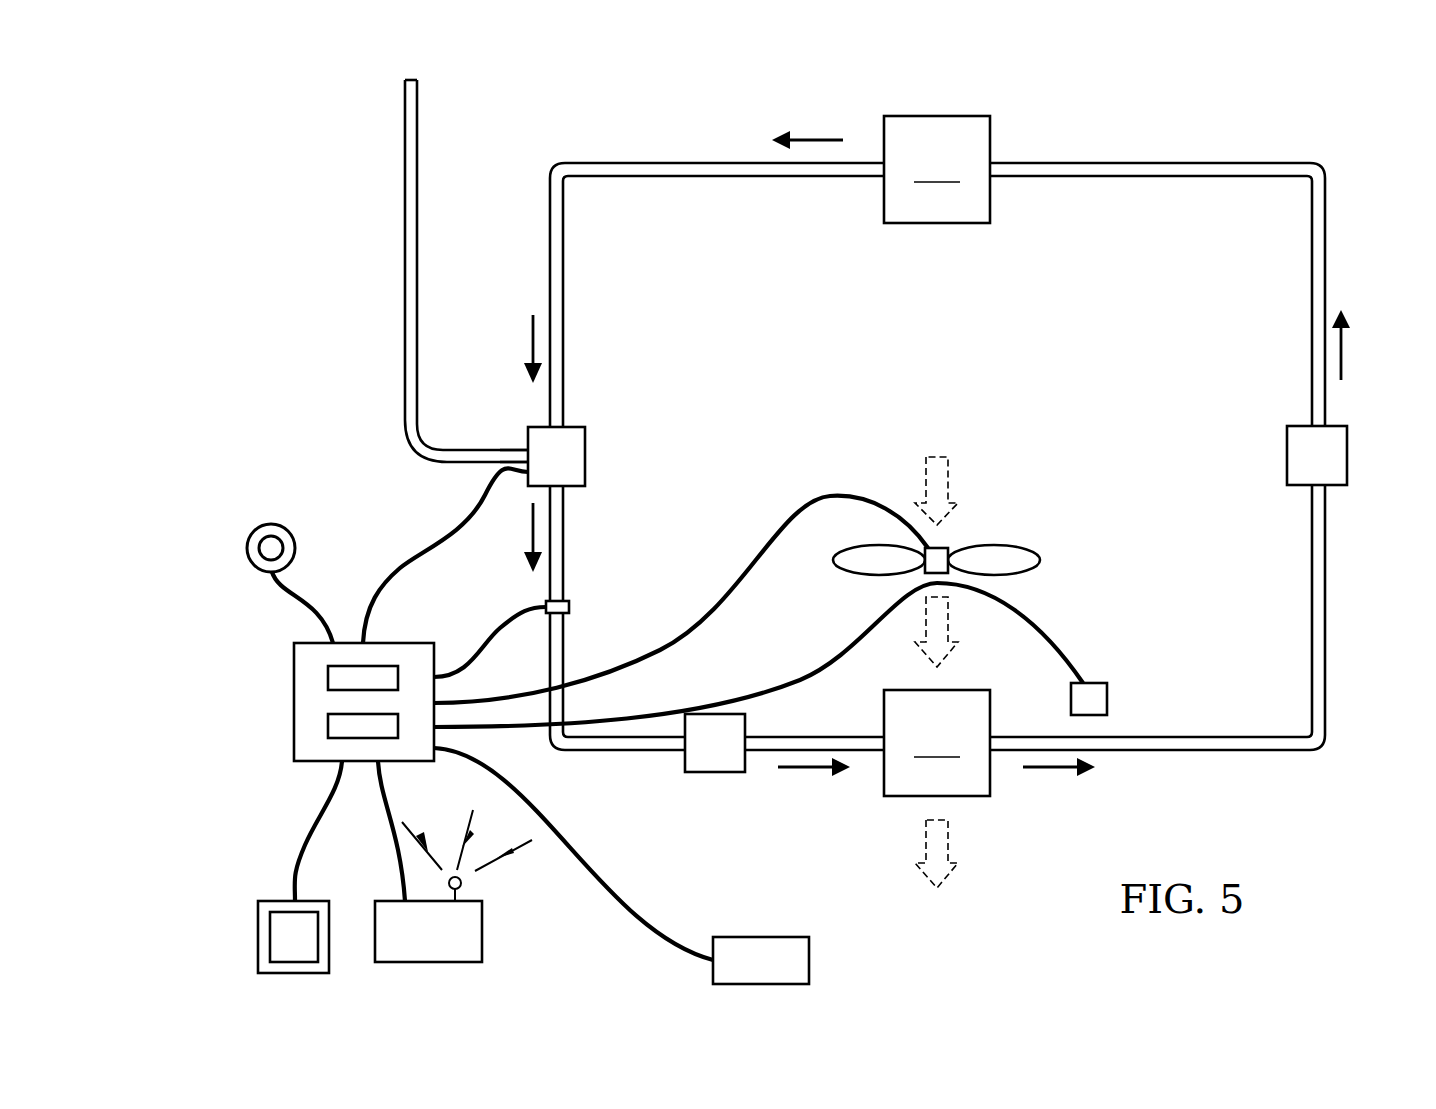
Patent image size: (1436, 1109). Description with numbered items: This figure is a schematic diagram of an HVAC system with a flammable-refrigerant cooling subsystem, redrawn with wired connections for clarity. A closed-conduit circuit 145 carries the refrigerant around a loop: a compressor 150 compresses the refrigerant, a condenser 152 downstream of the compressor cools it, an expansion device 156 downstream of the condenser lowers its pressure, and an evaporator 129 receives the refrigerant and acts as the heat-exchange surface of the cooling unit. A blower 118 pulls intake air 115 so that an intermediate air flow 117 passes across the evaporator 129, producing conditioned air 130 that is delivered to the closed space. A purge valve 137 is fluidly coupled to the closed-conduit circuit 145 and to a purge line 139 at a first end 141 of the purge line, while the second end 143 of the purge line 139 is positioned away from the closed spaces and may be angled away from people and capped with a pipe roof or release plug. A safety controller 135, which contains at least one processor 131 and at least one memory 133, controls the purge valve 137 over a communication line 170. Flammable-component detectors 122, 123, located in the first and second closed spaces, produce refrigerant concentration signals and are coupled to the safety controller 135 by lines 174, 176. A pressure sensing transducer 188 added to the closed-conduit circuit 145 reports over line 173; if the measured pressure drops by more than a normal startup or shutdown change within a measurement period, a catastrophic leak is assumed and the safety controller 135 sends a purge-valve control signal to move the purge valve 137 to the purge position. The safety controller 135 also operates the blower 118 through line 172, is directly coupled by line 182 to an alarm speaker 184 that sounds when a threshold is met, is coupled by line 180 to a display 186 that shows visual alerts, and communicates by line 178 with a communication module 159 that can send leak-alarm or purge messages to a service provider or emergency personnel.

The second end of purge line 143 is at (405, 95).
The purge line 139 is at (405, 250).
The first end of purge line 141 is at (524, 449).
The closed-conduit circuit 145 is at (614, 163).
The condenser 152 is at (937, 169).
The compressor 150 is at (1287, 456).
The expansion device 156 is at (713, 772).
The evaporator 129 is at (937, 743).
The purge valve 137 is at (585, 440).
The safety controller 135 is at (418, 635).
The processor 131 is at (328, 678).
The memory 133 is at (328, 724).
The communication line 170 is at (450, 533).
The communication line 182 is at (313, 608).
The alarm speaker 184 is at (247, 549).
The communication line 173 is at (512, 622).
The pressure sensing transducer 188 is at (569, 607).
The communication line 172 is at (814, 492).
The communication line 174 is at (768, 662).
The communication line 176 is at (585, 854).
The communication line 178 is at (385, 780).
The communication line 180 is at (297, 860).
The blower 118 is at (948, 548).
The intake air 115 is at (948, 474).
The intermediate air flow 117 is at (950, 626).
The conditioned air 130 is at (950, 880).
The flammable-component detector 122 is at (1107, 698).
The display 186 is at (258, 935).
The communication module 159 is at (482, 930).
The flammable-component detector 123 is at (760, 937).